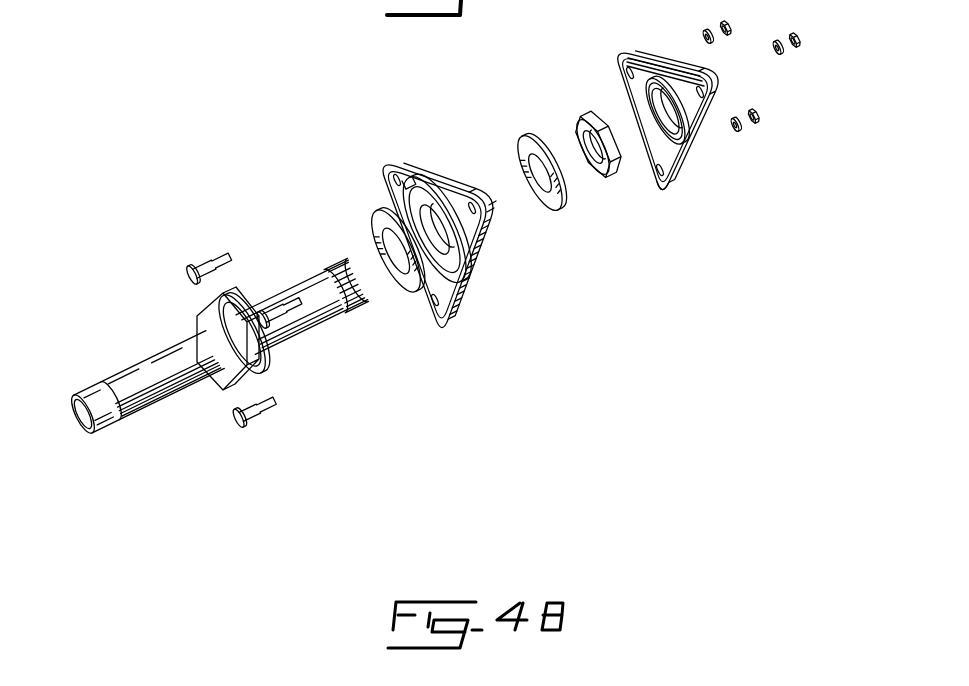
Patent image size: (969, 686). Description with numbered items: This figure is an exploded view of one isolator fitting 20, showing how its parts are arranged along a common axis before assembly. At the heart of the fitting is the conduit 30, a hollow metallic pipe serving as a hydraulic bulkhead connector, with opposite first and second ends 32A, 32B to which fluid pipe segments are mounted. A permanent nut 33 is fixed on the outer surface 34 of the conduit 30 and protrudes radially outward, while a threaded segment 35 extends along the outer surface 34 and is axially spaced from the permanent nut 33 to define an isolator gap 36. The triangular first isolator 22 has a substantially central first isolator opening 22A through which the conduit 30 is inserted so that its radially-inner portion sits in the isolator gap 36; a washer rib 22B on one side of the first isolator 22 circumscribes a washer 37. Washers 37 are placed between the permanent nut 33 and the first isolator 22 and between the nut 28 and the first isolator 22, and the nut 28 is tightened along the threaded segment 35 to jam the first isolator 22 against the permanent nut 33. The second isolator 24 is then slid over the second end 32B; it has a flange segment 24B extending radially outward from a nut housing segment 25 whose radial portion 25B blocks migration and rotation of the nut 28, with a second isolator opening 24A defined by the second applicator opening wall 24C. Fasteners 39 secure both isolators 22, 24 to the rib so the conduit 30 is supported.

The isolator fitting 20 is at (129, 268).
The first isolator 22 is at (356, 150).
The first isolator opening 22A is at (443, 240).
The washer rib 22B is at (434, 176).
The second isolator 24 is at (702, 203).
The second isolator opening 24A is at (666, 97).
The flange segment 24B is at (623, 63).
The second applicator opening wall 24C is at (667, 132).
The nut housing segment 25 is at (690, 142).
The radial portion 25B is at (670, 124).
The nut 28 is at (600, 177).
The conduit 30 is at (167, 424).
The first end 32A is at (78, 378).
The second end 32B is at (330, 243).
The permanent nut 33 is at (246, 352).
The outer surface 34 is at (147, 378).
The threaded segment 35 is at (239, 294).
The isolator gap 36 is at (250, 345).
The washers 37 is at (402, 288).
The fasteners 39 is at (198, 264).